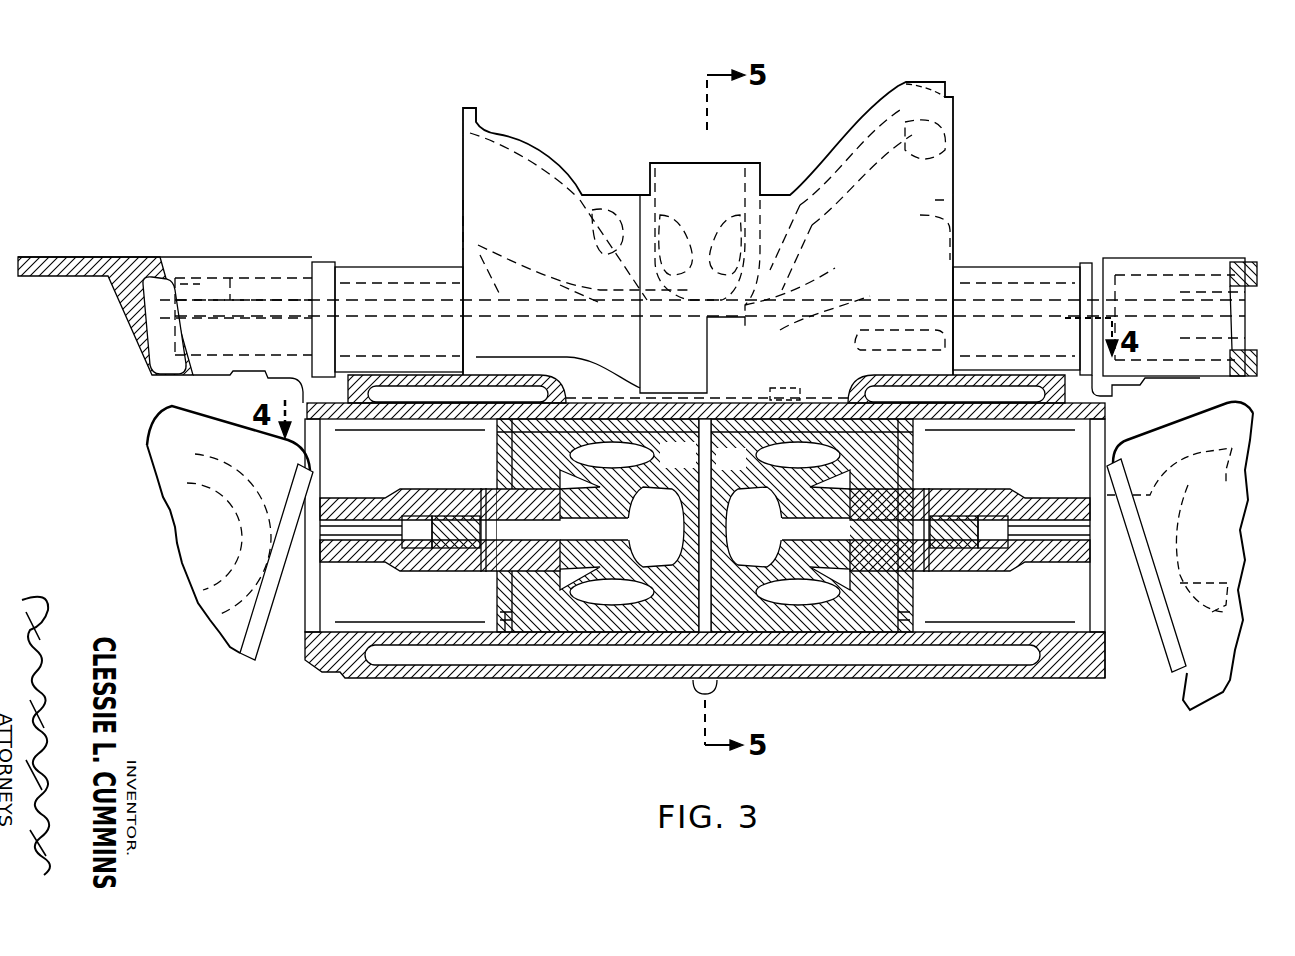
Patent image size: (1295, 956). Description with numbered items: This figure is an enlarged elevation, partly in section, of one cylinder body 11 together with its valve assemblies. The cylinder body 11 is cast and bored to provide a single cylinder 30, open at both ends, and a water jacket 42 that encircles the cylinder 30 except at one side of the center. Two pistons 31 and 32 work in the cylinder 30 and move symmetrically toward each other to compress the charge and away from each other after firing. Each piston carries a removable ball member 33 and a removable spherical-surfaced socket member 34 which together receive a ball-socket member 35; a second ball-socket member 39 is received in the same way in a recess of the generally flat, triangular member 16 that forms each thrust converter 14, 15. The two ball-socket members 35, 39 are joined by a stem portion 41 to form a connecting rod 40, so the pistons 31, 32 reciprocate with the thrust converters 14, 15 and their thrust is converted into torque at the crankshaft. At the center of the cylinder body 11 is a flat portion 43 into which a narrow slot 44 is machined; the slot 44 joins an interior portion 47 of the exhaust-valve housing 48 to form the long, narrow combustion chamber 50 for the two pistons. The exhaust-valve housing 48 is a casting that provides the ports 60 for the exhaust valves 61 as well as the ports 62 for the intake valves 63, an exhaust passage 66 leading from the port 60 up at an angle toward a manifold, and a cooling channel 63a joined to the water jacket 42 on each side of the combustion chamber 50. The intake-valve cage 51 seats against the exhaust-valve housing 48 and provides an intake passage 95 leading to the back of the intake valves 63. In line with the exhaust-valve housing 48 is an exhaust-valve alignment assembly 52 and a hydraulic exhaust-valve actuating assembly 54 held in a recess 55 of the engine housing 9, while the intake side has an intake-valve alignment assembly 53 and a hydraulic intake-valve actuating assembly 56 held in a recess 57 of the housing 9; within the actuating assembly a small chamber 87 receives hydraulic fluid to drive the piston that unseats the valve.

The engine housing 9 is at (78, 257).
The small chamber 87 is at (155, 296).
The hydraulic intake-valve actuating assembly 56 is at (220, 283).
The recess 57 is at (188, 282).
The intake-valve alignment assembly 53 is at (410, 268).
The exhaust-valve housing 48 is at (955, 131).
The intake-valve cage 51 is at (462, 124).
The intake passage 95 is at (480, 167).
The intake-valve port 62 is at (618, 297).
The intake valve 63 is at (676, 350).
The cooling channel 63a is at (955, 92).
The exhaust-valve port 60 is at (790, 274).
The exhaust valve 61 is at (768, 296).
The exhaust passage 66 is at (958, 196).
The interior portion 47 is at (712, 402).
The flat portion 43 is at (598, 403).
The exhaust-valve alignment assembly 52 is at (1038, 268).
The recess 55 is at (1148, 282).
The hydraulic exhaust-valve actuating assembly 54 is at (1232, 262).
The cylinder 30 is at (1020, 614).
The piston 31 is at (590, 625).
The water jacket 42 is at (968, 658).
The piston 32 is at (845, 632).
The cylinder body 11 is at (1060, 678).
The slot 44 is at (703, 425).
The combustion chamber 50 is at (705, 523).
The ball member 33 is at (790, 560).
The ball-socket member 35 is at (530, 488).
The connecting rod 40 is at (410, 495).
The stem portion 41 is at (400, 568).
The ball-socket member 39 is at (1184, 508).
The spherical-surfaced socket member 34 is at (520, 608).
The triangular member 16 is at (700, 556).
The thrust converter 15 is at (258, 651).
The thrust converter 14 is at (1188, 675).